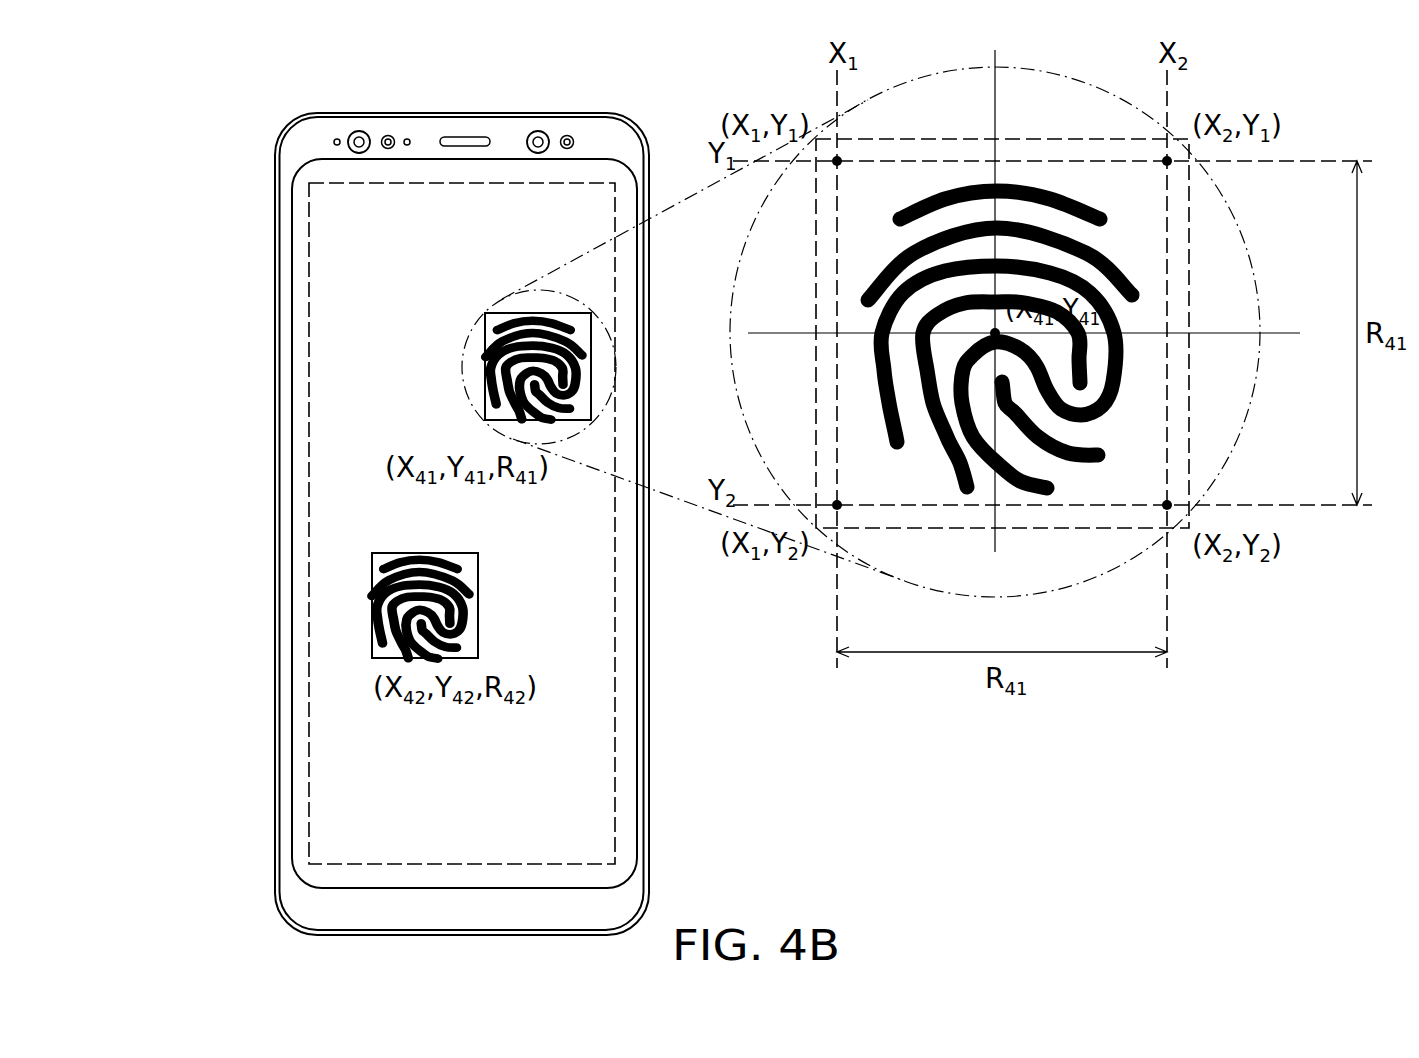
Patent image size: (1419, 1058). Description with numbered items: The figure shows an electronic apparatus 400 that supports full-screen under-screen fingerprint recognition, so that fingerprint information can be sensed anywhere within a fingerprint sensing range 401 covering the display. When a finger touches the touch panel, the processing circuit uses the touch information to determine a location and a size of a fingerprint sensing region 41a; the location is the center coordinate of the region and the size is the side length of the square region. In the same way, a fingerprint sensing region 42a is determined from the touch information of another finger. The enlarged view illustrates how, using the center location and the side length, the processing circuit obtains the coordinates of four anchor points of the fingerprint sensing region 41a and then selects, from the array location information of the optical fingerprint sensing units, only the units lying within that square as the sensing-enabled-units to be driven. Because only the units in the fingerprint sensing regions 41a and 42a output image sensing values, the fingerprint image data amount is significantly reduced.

The electronic apparatus 400 is at (250, 176).
The fingerprint sensing range 401 is at (300, 258).
The fingerprint sensing region 41a is at (485, 362).
The fingerprint sensing region 42a is at (372, 605).